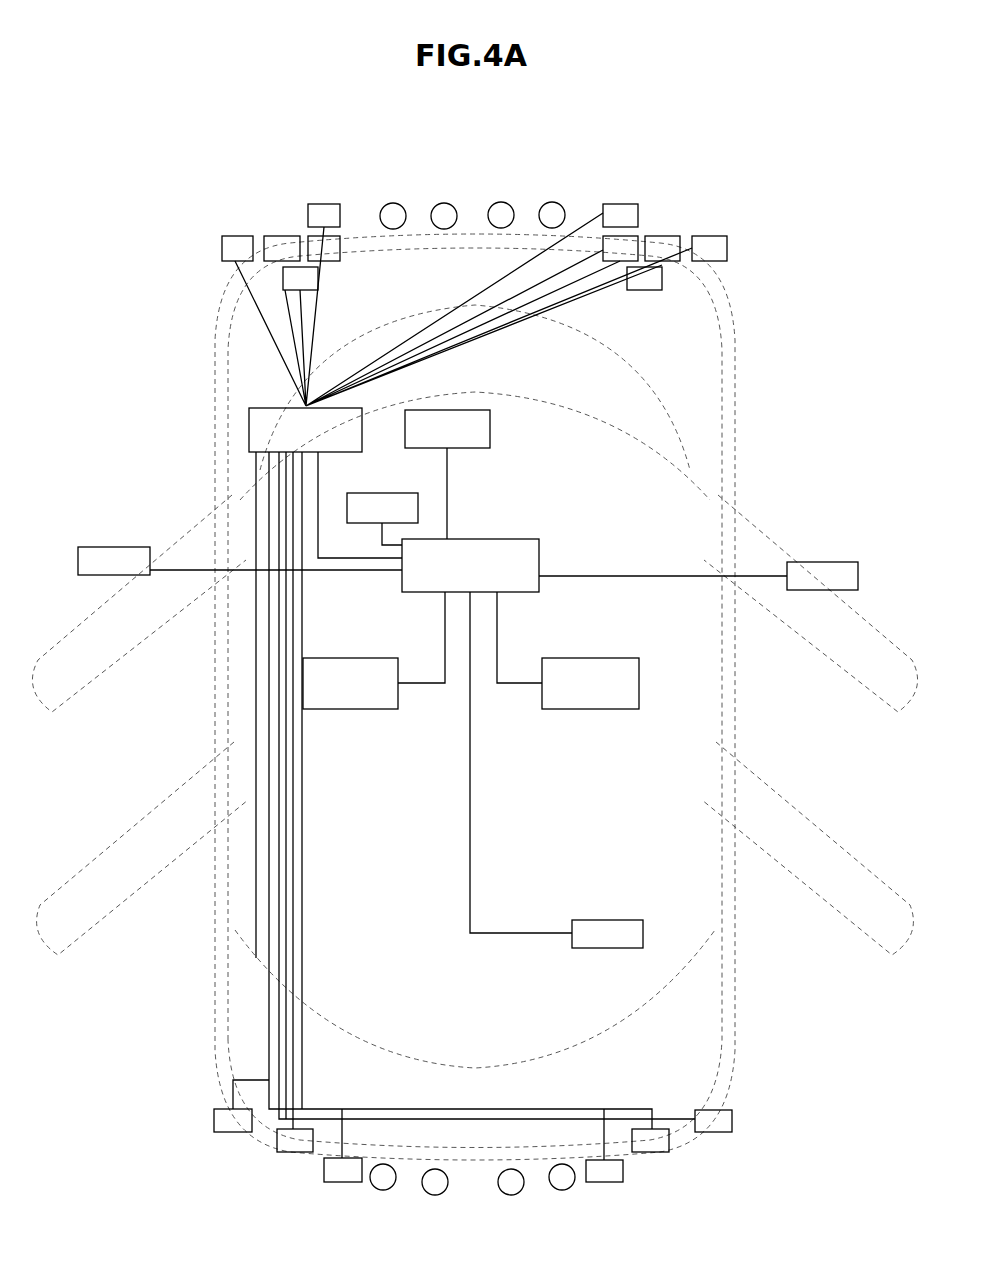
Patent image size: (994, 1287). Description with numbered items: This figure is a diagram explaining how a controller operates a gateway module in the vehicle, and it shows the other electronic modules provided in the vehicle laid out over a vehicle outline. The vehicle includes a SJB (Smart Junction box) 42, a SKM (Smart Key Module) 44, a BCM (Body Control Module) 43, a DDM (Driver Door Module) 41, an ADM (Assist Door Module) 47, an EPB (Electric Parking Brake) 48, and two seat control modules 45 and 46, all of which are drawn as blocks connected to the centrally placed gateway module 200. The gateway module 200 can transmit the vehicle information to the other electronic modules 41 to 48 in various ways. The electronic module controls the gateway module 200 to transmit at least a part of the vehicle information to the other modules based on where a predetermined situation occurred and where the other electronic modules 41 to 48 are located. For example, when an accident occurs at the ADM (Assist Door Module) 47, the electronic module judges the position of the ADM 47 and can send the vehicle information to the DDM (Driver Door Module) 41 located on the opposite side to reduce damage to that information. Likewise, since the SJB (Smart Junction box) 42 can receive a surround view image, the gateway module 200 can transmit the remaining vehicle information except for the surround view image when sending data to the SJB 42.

The DDM (Driver Door Module) 41 is at (92, 547).
The SJB (Smart Junction box) 42 is at (262, 408).
The BCM (Body Control Module) 43 is at (476, 410).
The SKM (Smart Key Module) 44 is at (382, 493).
The seat control module 45 is at (374, 658).
The seat control module 46 is at (550, 658).
The ADM (Assist Door Module) 47 is at (848, 562).
The EPB (Electric Parking Brake) 48 is at (585, 920).
The gateway module 200 is at (516, 539).